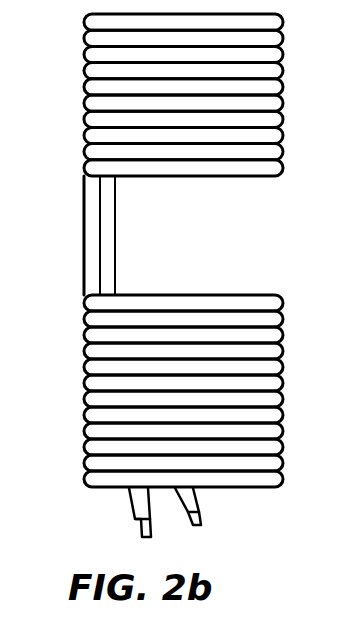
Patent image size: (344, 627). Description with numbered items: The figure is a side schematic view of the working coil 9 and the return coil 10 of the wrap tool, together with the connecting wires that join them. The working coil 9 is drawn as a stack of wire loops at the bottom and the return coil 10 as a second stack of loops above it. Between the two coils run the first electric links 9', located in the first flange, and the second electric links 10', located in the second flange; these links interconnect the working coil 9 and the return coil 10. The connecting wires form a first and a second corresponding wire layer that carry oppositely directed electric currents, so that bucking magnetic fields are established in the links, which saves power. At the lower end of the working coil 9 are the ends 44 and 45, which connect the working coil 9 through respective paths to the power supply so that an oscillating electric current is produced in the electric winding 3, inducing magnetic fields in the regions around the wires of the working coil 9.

The electric winding 3 is at (68, 384).
The working coil 9 is at (183, 368).
The first electric links 9' is at (59, 235).
The return coil 10 is at (183, 121).
The second electric links 10' is at (150, 235).
The end 44 is at (200, 502).
The end 45 is at (130, 503).